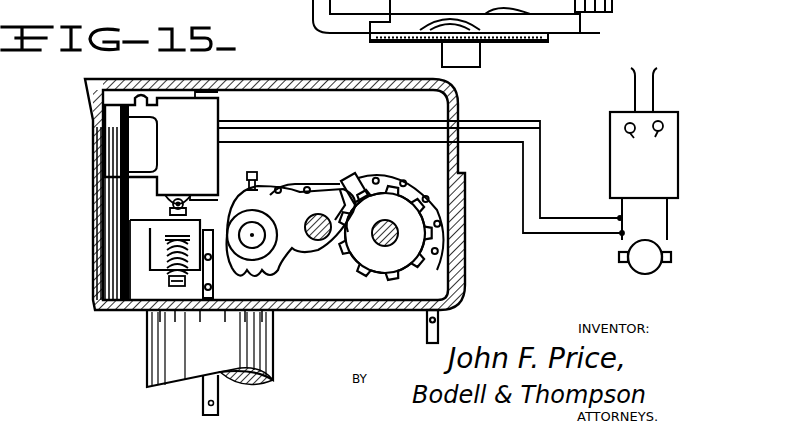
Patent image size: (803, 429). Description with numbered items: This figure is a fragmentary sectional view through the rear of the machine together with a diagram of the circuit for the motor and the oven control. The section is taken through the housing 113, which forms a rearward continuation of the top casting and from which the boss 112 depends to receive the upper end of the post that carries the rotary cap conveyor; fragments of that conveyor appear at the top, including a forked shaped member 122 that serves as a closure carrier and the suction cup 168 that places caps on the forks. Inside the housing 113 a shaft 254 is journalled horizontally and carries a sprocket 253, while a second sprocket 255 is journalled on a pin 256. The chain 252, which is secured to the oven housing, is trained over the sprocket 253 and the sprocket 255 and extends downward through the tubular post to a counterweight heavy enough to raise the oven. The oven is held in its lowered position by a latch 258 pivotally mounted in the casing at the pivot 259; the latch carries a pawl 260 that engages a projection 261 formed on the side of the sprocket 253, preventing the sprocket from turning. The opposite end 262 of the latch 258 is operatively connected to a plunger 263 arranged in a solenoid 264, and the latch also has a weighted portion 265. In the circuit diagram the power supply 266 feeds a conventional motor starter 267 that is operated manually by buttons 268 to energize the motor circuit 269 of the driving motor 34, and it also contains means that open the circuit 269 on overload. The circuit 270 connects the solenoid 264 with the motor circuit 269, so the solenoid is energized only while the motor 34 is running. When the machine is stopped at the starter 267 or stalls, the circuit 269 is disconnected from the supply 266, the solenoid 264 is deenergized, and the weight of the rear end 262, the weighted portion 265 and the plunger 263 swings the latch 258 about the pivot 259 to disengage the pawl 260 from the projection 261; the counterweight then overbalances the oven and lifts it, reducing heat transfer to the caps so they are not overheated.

The motor 34 is at (637, 264).
The boss 112 is at (274, 352).
The housing 113 is at (466, 224).
The forked shaped member 122 is at (515, 40).
The suction cup 168 is at (505, 22).
The chain 252 is at (426, 326).
The sprocket 253 is at (375, 277).
The shaft 254 is at (388, 227).
The sprocket 255 is at (318, 255).
The pin 256 is at (252, 240).
The latch 258 is at (345, 190).
The pivot 259 is at (319, 213).
The pawl 260 is at (378, 195).
The projection 261 is at (357, 203).
The opposite end of the latch 262 is at (168, 238).
The plunger 263 is at (168, 205).
The solenoid 264 is at (222, 166).
The weighted portion 265 is at (132, 250).
The power supply 266 is at (645, 81).
The motor starter 267 is at (612, 157).
The buttons 268 is at (644, 136).
The motor circuit 269 is at (668, 232).
The circuit 270 is at (565, 233).